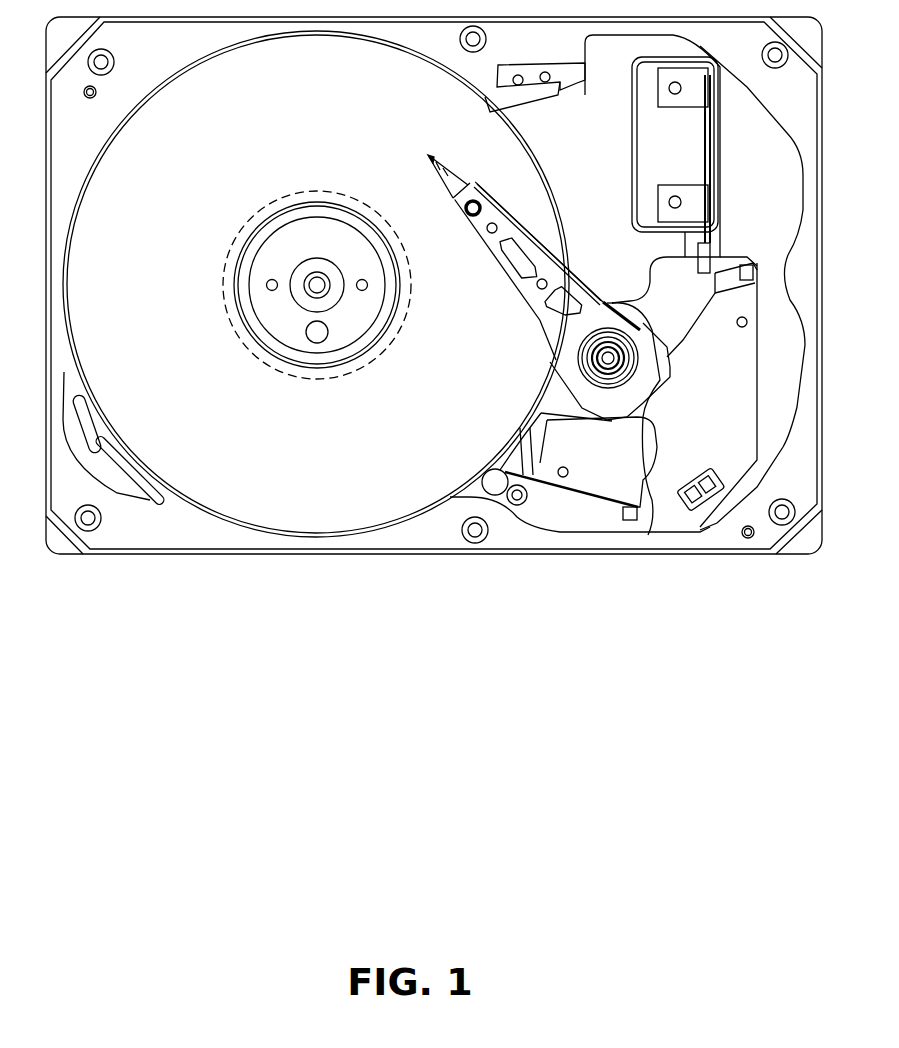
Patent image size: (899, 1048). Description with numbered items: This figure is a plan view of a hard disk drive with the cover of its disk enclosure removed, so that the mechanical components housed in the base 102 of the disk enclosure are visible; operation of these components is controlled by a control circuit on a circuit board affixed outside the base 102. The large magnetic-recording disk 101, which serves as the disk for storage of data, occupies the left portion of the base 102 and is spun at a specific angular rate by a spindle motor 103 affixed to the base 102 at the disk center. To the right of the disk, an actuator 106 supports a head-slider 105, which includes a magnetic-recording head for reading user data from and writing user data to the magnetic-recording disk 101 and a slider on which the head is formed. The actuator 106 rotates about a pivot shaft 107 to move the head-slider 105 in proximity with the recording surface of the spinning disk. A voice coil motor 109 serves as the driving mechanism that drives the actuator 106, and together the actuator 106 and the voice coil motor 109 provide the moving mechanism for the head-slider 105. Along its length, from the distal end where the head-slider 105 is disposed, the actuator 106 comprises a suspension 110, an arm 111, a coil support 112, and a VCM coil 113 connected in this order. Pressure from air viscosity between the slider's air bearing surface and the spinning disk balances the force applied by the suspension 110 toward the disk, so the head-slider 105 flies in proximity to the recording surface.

The magnetic-recording disk 101 is at (542, 170).
The base 102 is at (372, 554).
The spindle motor 103 is at (297, 378).
The head-slider 105 is at (433, 162).
The actuator 106 is at (482, 255).
The pivot shaft 107 is at (578, 358).
The voice coil motor 109 is at (553, 505).
The suspension 110 is at (452, 198).
The arm 111 is at (521, 305).
The coil support 112 is at (757, 413).
The VCM coil 113 is at (643, 417).